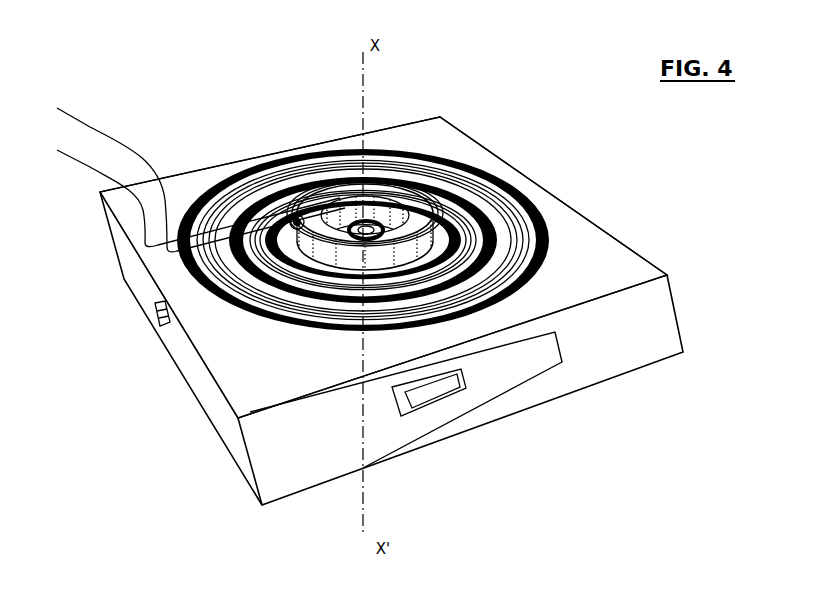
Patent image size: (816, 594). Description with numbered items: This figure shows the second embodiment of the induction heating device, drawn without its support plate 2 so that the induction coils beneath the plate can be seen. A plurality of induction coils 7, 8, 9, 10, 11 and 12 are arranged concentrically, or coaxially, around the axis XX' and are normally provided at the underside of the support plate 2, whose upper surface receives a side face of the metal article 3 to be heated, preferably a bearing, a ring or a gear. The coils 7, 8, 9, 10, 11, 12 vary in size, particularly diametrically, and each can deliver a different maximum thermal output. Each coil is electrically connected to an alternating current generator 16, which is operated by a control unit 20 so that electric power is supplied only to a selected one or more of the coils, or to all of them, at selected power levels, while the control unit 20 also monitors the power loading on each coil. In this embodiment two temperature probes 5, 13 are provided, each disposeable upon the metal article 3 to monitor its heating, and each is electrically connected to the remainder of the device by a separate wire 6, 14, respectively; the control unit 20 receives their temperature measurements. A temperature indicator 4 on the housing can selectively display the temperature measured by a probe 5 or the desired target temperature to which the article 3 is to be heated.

The support plate 2 is at (547, 242).
The metal article 3 is at (432, 200).
The temperature indicator 4 is at (443, 395).
The temperature probe 5 is at (293, 163).
The wire 6 is at (186, 193).
The induction coil 7 is at (550, 257).
The induction coil 8 is at (440, 282).
The induction coil 9 is at (455, 280).
The induction coil 10 is at (563, 233).
The induction coil 11 is at (393, 195).
The induction coil 12 is at (291, 212).
The temperature probe 13 is at (267, 173).
The wire 14 is at (186, 170).
The generator 16 is at (231, 358).
The control unit 20 is at (240, 386).